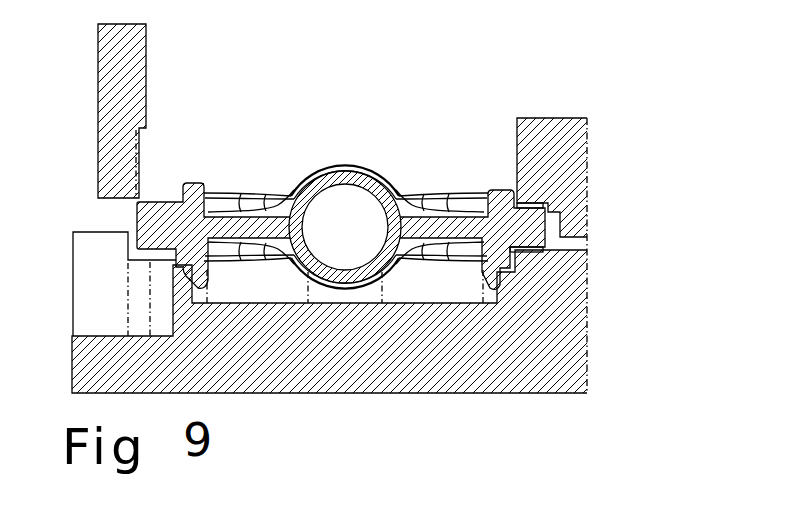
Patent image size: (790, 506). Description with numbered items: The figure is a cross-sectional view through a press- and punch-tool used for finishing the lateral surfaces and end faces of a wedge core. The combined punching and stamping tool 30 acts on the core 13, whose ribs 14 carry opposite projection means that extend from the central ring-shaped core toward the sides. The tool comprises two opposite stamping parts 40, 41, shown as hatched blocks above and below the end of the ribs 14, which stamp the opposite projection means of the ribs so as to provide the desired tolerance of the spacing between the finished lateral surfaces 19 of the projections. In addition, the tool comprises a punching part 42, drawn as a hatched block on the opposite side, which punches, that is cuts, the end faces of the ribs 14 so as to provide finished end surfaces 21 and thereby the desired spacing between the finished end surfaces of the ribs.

The core 13 is at (347, 182).
The ribs 14 is at (174, 199).
The lateral surfaces 19 is at (536, 203).
The finished end surfaces 21 is at (137, 220).
The combined punching and stamping tool 30 is at (358, 201).
The stamping part 40 is at (564, 178).
The stamping part 41 is at (576, 289).
The punching part 42 is at (136, 70).